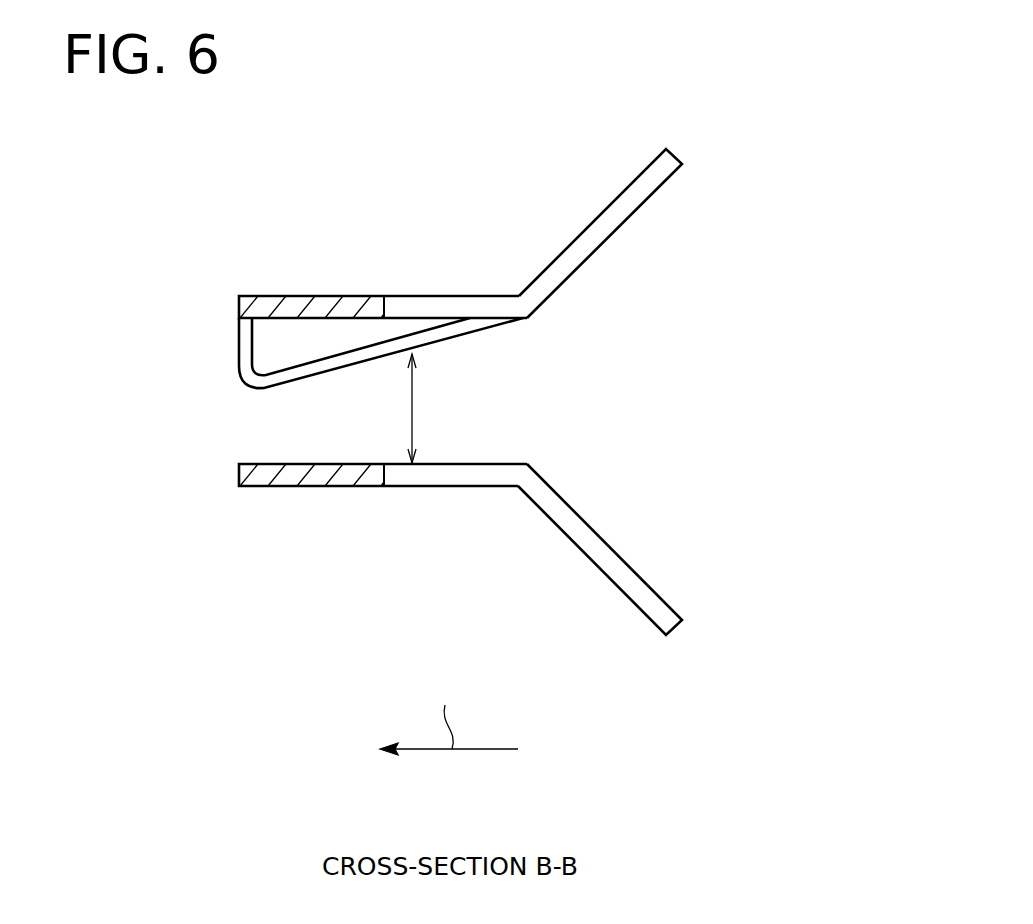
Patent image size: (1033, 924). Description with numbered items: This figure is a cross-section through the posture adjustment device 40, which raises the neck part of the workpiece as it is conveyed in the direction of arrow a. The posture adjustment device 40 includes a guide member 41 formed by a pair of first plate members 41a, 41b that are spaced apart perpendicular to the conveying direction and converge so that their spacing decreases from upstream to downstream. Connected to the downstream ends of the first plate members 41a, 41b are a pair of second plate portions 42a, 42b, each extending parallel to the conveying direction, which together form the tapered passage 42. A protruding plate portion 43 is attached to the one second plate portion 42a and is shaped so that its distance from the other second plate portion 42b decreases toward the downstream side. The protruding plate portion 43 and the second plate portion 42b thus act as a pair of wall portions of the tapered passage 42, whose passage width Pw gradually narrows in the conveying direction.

The posture adjustment device 40 is at (752, 118).
The guide member 41 is at (643, 392).
The first plate member 41a is at (647, 185).
The first plate member 41b is at (647, 600).
The tapered passage 42 is at (488, 383).
The second plate portion 42a is at (432, 310).
The second plate portion 42b is at (430, 475).
The protruding plate portion 43 is at (313, 373).